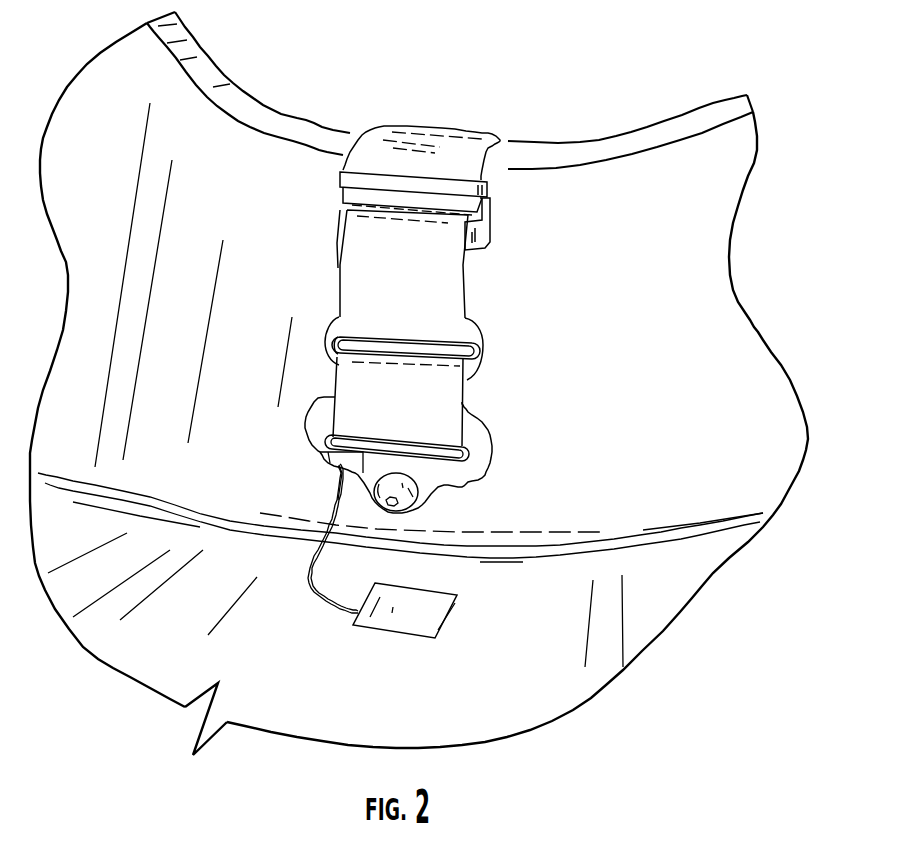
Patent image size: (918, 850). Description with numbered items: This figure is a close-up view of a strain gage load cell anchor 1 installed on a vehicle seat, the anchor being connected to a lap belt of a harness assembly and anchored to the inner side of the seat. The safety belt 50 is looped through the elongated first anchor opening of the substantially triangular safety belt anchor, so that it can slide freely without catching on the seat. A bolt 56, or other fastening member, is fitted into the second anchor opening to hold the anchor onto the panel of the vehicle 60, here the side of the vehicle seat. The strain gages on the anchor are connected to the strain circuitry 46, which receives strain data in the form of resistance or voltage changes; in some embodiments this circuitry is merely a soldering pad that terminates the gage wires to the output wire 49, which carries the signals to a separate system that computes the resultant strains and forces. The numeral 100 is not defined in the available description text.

The collar of garment 100 is at (586, 138).
The vehicle 60 is at (640, 275).
The strain gage load cell anchor 1 is at (514, 443).
The safety belt 50 is at (465, 402).
The bolt 56 is at (425, 492).
The strain circuitry 46 is at (337, 462).
The output wire 49 is at (310, 565).